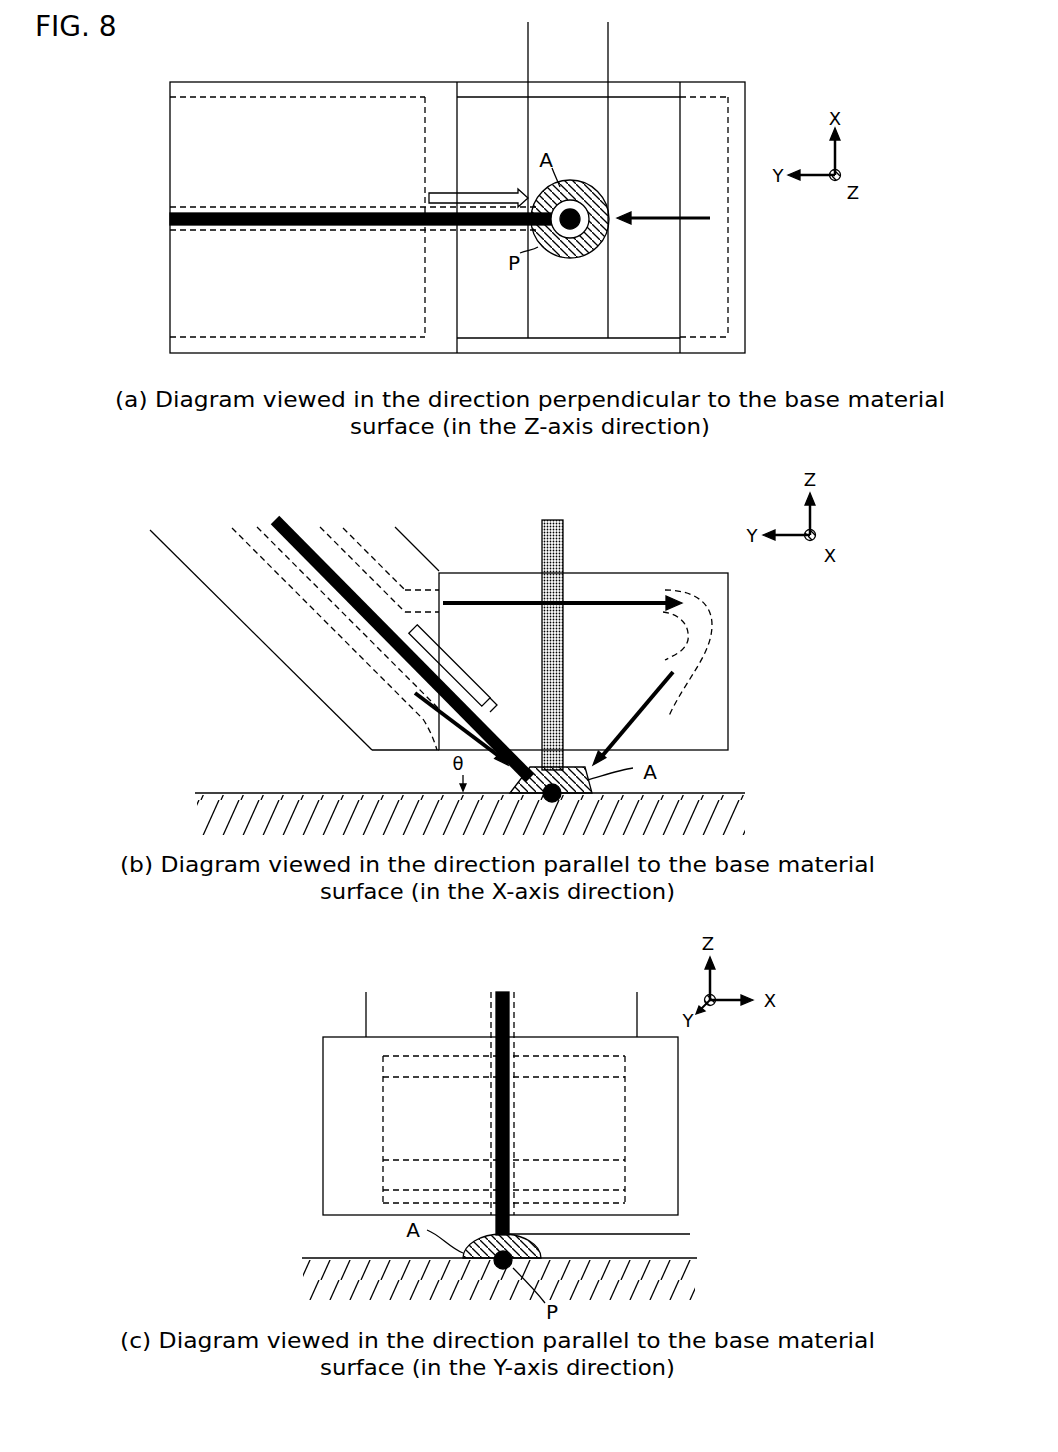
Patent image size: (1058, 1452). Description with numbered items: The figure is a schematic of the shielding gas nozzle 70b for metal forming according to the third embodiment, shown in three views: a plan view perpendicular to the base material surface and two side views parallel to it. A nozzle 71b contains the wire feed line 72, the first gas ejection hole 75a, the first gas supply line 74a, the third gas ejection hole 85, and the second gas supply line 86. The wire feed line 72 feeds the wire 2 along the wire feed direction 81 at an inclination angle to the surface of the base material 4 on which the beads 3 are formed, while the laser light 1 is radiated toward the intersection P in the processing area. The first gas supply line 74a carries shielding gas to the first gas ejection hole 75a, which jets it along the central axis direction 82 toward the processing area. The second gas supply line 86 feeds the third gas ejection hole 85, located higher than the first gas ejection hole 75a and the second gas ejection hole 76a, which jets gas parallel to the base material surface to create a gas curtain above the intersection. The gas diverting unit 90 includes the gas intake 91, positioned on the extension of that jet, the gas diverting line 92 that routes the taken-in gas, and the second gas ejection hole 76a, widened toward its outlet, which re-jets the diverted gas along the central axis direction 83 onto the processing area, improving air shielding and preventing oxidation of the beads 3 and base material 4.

The laser light 1 is at (610, 195).
The wire 2 is at (210, 228).
The beads 3 is at (608, 148).
The base material 4 is at (250, 800).
The shielding gas nozzle for metal forming 70b is at (780, 262).
The nozzle 71b is at (270, 82).
The wire feed line 72 is at (310, 208).
The first gas supply line 74a is at (322, 617).
The first gas ejection hole 75a is at (430, 745).
The second gas ejection hole 76a is at (672, 718).
The wire feed direction 81 is at (475, 193).
The central axis direction of the first gas ejection hole 82 is at (460, 735).
The central axis direction of the second gas ejection hole 83 is at (653, 218).
The third gas ejection hole 85 is at (433, 98).
The second gas supply line 86 is at (310, 97).
The gas diverting unit 90 is at (702, 82).
The gas intake 91 is at (660, 597).
The gas diverting line 92 is at (745, 312).